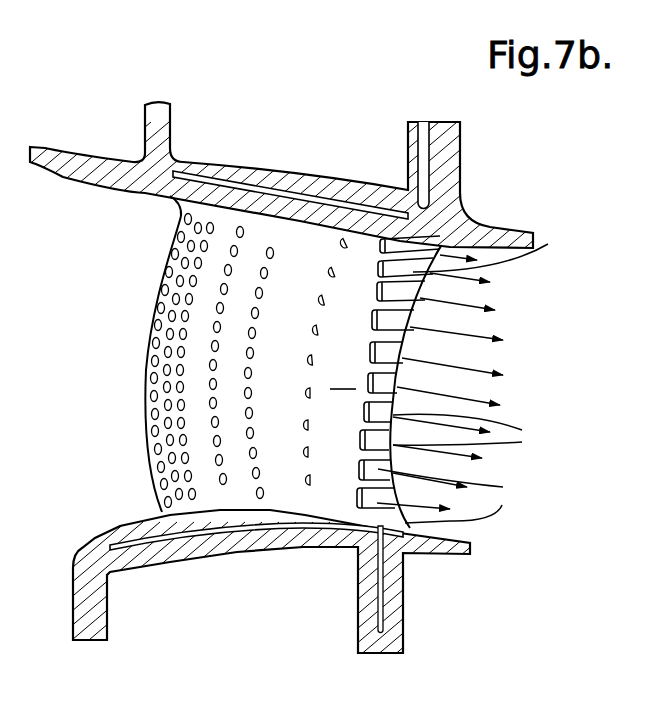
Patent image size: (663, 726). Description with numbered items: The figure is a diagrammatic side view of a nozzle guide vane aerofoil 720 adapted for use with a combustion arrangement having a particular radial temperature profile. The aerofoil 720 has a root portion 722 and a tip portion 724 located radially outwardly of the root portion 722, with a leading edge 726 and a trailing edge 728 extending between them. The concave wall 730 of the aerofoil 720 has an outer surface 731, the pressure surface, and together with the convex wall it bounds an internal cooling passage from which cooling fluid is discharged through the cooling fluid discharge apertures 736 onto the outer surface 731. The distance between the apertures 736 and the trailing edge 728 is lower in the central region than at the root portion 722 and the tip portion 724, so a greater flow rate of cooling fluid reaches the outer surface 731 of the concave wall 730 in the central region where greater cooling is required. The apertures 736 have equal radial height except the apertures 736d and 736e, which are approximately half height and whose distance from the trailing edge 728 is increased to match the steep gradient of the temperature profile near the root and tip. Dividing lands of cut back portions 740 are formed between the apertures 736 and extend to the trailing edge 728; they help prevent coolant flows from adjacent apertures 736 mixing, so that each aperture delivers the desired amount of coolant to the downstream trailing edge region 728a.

The aerofoil 720 is at (232, 104).
The root portion 722 is at (242, 519).
The tip portion 724 is at (300, 199).
The leading edge 726 is at (147, 366).
The trailing edge 728 is at (418, 314).
The downstream trailing edge region 728a is at (407, 224).
The concave wall 730 is at (185, 207).
The outer surface 731 is at (317, 505).
The cooling fluid discharge apertures 736 is at (454, 379).
The aperture 736d is at (509, 246).
The aperture 736e is at (448, 241).
The dividing lands of cut back portions 740 is at (484, 420).